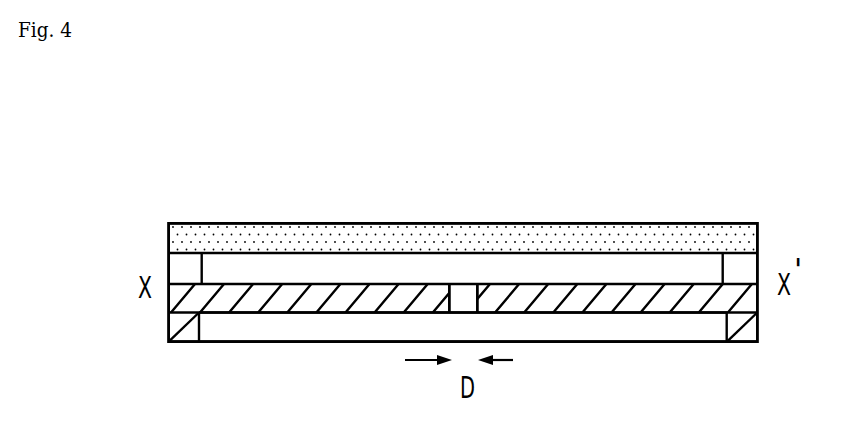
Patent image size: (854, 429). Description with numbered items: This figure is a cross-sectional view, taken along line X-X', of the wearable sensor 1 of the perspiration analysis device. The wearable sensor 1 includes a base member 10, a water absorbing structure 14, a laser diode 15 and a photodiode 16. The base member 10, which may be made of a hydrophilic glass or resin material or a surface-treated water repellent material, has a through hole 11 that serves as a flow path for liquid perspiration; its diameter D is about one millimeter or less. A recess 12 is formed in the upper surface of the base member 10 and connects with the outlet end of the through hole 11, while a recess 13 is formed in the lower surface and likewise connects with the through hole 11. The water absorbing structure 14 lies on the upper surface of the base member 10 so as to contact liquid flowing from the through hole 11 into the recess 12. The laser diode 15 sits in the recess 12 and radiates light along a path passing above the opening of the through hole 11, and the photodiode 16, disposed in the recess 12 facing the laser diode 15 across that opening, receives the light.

The wearable sensor 1 is at (442, 130).
The base member 10 is at (752, 326).
The through hole 11 is at (463, 302).
The recess 12 is at (532, 268).
The recess 13 is at (302, 325).
The water absorbing structure 14 is at (618, 223).
The laser diode 15 is at (192, 270).
The photodiode 16 is at (737, 272).